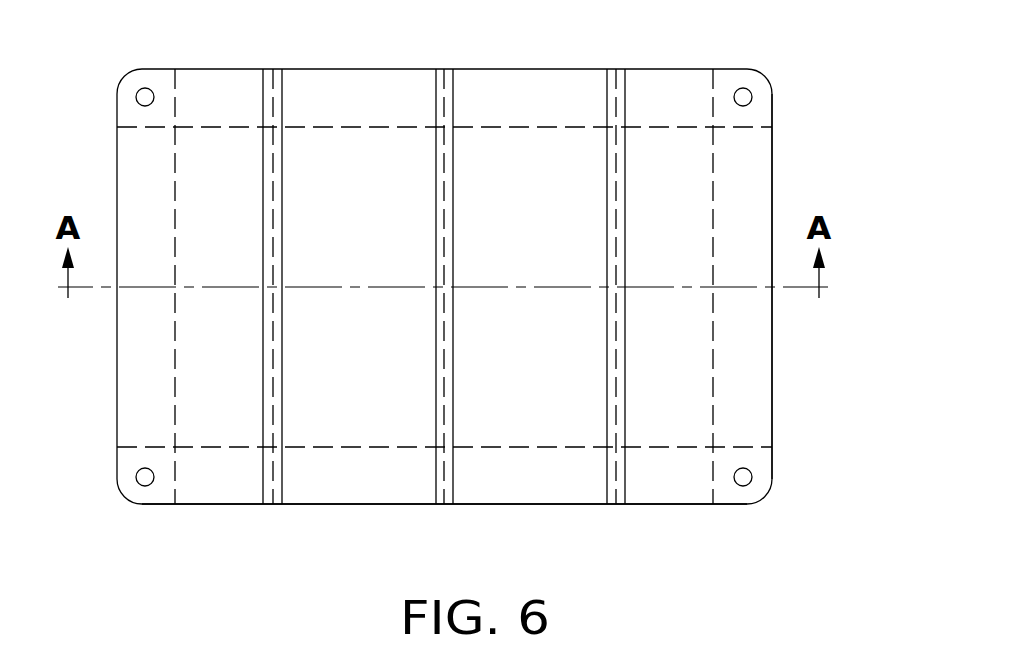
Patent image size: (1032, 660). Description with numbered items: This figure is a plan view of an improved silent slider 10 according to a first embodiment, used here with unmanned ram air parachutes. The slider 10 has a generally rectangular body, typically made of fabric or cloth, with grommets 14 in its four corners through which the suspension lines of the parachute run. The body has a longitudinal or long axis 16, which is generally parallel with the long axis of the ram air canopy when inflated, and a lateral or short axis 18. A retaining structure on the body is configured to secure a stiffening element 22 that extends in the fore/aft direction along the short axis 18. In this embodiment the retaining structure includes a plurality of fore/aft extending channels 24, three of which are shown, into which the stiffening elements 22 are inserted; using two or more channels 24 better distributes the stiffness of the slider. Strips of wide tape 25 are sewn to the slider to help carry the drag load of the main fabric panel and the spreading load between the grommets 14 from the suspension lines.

The slider 10 is at (511, 302).
The grommets 14 is at (136, 97).
The longitudinal axis 16 is at (385, 506).
The lateral axis 18 is at (772, 178).
The stiffening element 22 is at (617, 472).
The channels 24 is at (282, 466).
The strips of wide tape 25 is at (175, 107).